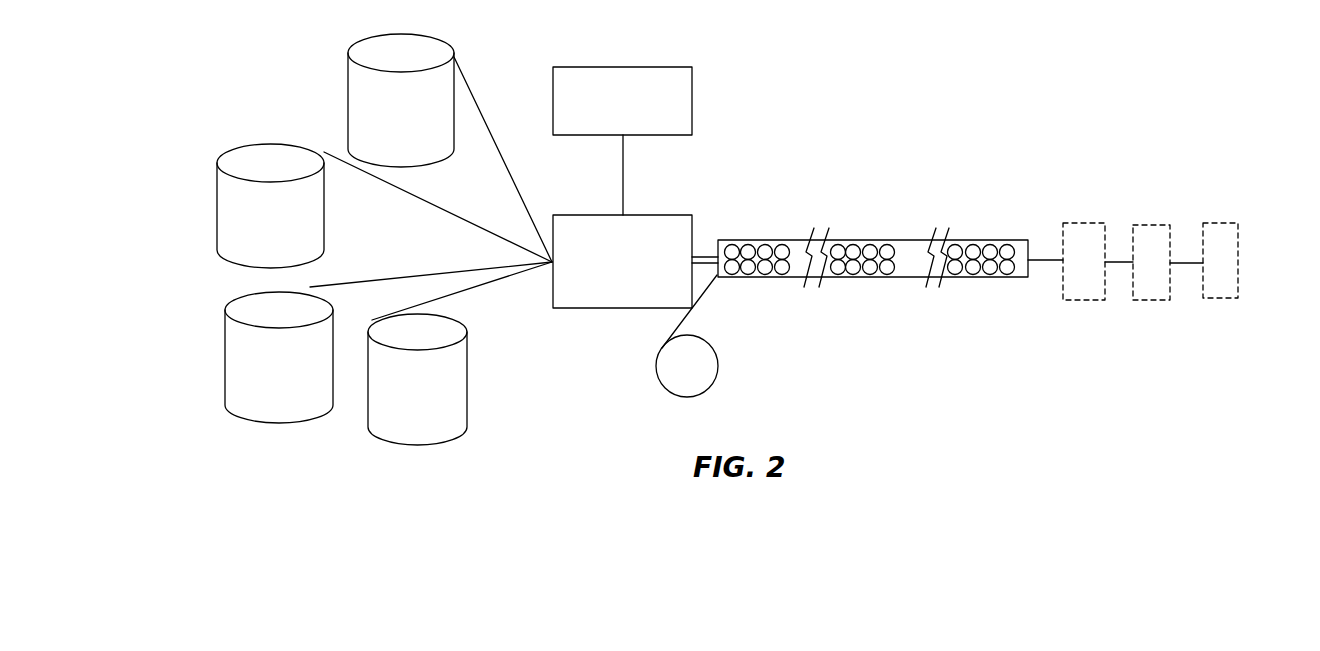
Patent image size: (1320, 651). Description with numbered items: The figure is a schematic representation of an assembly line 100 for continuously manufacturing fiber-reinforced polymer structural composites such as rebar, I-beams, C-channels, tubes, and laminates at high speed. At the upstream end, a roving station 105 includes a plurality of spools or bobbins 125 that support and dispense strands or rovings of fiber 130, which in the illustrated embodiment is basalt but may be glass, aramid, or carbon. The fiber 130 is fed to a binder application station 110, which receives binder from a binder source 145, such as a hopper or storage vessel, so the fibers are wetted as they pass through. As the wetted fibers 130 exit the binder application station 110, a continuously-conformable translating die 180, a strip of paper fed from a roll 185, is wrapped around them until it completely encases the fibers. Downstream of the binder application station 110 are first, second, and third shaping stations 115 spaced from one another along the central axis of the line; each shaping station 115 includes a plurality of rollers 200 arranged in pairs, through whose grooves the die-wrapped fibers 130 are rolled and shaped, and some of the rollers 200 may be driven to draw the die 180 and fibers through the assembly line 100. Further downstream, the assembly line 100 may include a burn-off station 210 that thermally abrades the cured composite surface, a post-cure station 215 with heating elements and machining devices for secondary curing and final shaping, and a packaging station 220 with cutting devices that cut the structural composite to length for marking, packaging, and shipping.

The assembly line 100 is at (823, 60).
The roving station 105 is at (325, 465).
The binder application station 110 is at (600, 335).
The shaping stations 115 is at (758, 228).
The bobbins 125 is at (348, 95).
The fiber 130 is at (457, 272).
The binder source 145 is at (625, 67).
The translating die 180 is at (705, 288).
The roll 185 is at (718, 364).
The rollers 200 is at (887, 274).
The burn-off station 210 is at (1080, 222).
The post-cure station 215 is at (1150, 225).
The packaging station 220 is at (1218, 223).